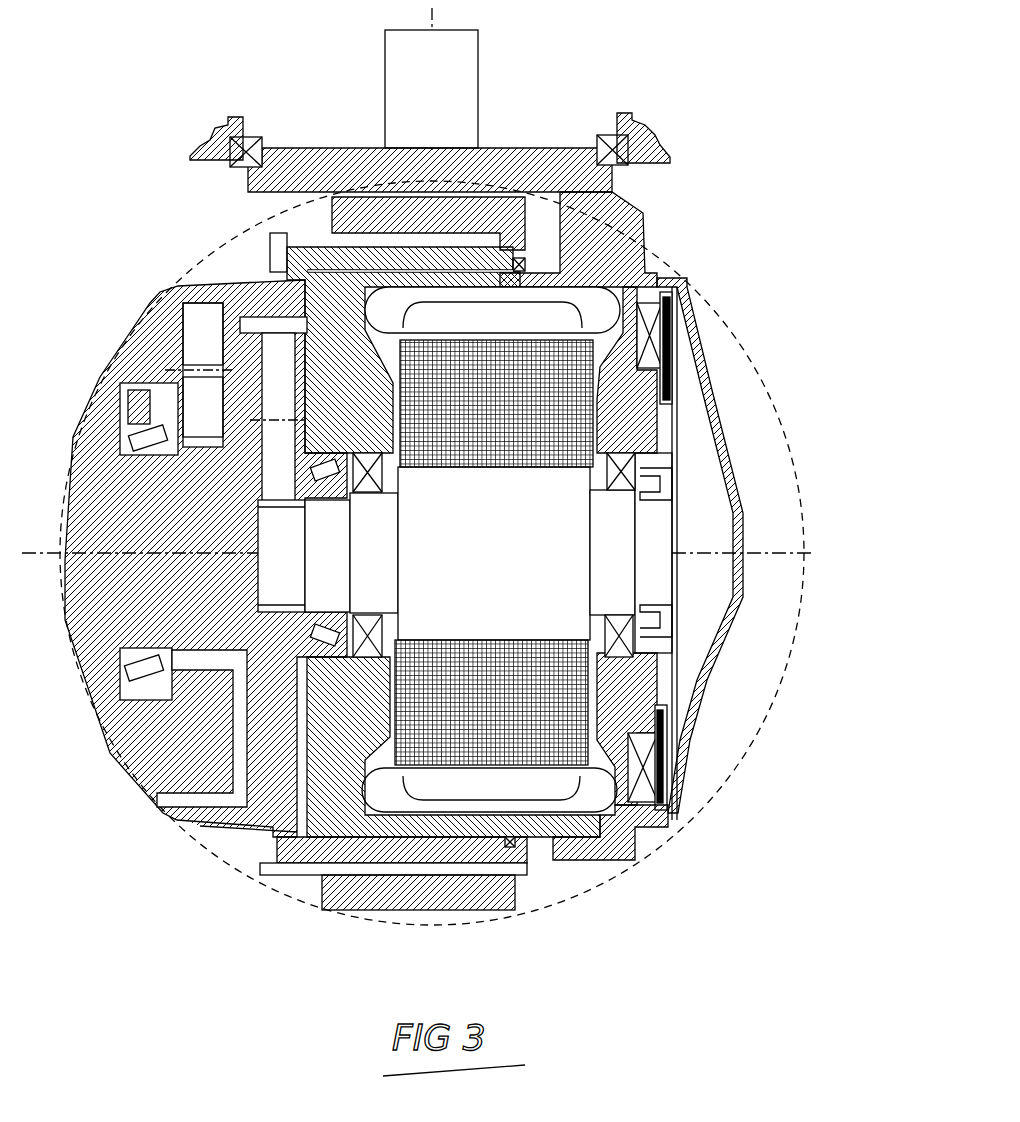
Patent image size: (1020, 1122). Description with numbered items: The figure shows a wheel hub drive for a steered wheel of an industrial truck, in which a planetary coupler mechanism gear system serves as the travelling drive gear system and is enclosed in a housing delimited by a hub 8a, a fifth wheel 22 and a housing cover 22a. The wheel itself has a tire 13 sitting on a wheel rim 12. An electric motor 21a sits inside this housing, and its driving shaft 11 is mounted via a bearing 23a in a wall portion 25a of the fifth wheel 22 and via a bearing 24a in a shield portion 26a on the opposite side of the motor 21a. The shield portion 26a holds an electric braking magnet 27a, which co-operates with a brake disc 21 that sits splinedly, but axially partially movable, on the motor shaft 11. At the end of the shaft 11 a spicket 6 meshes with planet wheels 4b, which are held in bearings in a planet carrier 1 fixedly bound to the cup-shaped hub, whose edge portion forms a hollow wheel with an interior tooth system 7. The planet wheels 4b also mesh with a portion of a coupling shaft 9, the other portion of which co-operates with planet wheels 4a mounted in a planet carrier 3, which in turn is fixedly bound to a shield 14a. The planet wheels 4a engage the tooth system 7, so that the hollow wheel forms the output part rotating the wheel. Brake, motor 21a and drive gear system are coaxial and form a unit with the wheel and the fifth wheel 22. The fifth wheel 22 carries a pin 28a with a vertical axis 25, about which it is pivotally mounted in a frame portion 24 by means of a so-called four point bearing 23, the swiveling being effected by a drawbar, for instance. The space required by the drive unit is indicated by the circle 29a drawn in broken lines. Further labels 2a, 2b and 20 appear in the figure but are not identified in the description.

The planet carrier 1 is at (125, 630).
The housing 2a is at (105, 380).
The housing part 2b is at (153, 803).
The planet carrier 3 is at (158, 730).
The planet wheels 4a is at (175, 287).
The planet wheels 4b is at (232, 280).
The spicket 6 is at (140, 320).
The interior tooth system 7 is at (177, 825).
The hub 8a is at (138, 313).
The coupling shaft 9 is at (220, 827).
The drive shaft 11 is at (615, 532).
The wheel rim 12 is at (300, 867).
The tire 13 is at (505, 900).
The shield 14a is at (310, 770).
The rotor magnet 20 is at (565, 700).
The brake disc 21 is at (672, 727).
The electric motor 21a is at (532, 503).
The fifth wheel 22 is at (610, 238).
The housing cover 22a is at (712, 405).
The four point bearing 23 is at (604, 149).
The bearing 23a is at (342, 838).
The frame portion 24 is at (641, 150).
The bearing 24a is at (620, 627).
The vertical axis 25 is at (432, 13).
The wall portion 25a is at (357, 800).
The shield portion 26a is at (643, 428).
The electric braking magnet 27a is at (660, 343).
The pin 28a is at (466, 73).
The circle 29a is at (793, 473).